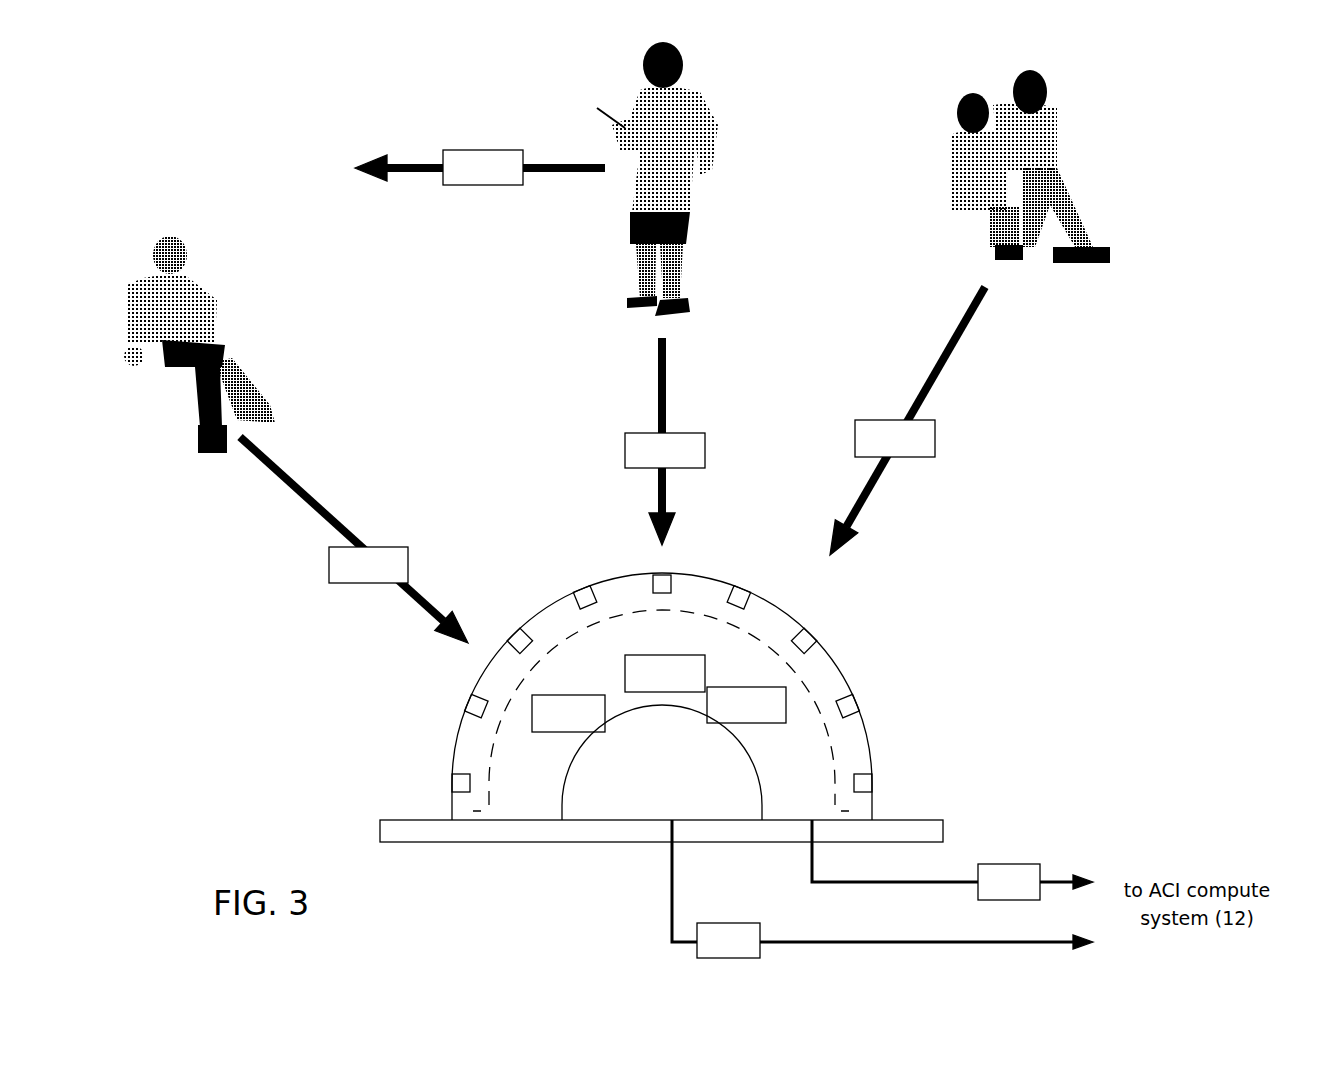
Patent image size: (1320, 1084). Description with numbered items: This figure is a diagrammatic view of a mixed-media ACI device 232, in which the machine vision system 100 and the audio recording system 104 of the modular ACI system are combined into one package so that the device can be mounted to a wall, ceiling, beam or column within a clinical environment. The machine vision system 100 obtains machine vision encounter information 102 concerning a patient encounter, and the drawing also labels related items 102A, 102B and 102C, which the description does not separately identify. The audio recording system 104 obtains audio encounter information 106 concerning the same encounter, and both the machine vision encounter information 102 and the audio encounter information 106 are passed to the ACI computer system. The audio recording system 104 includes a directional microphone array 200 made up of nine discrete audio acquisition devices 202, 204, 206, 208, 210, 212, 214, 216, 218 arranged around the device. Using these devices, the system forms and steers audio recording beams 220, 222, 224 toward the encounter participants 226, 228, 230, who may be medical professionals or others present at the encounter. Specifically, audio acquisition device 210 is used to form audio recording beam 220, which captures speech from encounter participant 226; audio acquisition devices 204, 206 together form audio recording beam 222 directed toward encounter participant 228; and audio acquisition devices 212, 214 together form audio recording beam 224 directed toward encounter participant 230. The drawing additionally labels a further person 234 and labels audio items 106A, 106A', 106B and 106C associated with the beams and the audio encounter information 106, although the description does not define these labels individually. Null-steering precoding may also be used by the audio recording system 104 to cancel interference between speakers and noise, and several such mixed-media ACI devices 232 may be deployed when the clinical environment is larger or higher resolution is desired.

The machine vision system 100 is at (662, 762).
The machine vision encounter information 102 is at (882, 889).
The display component 102A is at (665, 673).
The display component 102B is at (568, 713).
The display component 102C is at (746, 705).
The audio recording system 104 is at (915, 628).
The audio encounter information 106 is at (952, 860).
The audio encounter information 106A is at (665, 441).
The redirected audio output 106A' is at (480, 167).
The audio encounter information 106B is at (354, 540).
The audio encounter information 106C is at (907, 421).
The directional microphone array 200 is at (656, 606).
The audio acquisition device 202 is at (455, 787).
The audio acquisition device 204 is at (468, 708).
The audio acquisition device 206 is at (512, 637).
The audio acquisition device 208 is at (580, 598).
The audio acquisition device 210 is at (655, 586).
The audio acquisition device 212 is at (748, 598).
The audio acquisition device 214 is at (812, 640).
The audio acquisition device 216 is at (858, 707).
The audio acquisition device 218 is at (868, 785).
The audio recording beam 220 is at (648, 368).
The audio recording beam 222 is at (322, 503).
The audio recording beam 224 is at (922, 380).
The encounter participant 226 is at (722, 87).
The encounter participant 228 is at (192, 270).
The encounter participant 230 is at (1073, 128).
The mixed-media ACI device 232 is at (313, 614).
The encounter participant (third party) 234 is at (952, 175).